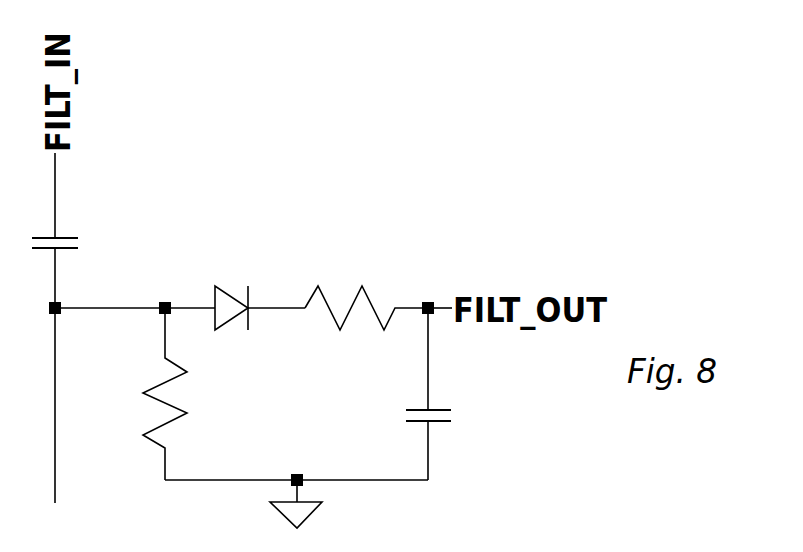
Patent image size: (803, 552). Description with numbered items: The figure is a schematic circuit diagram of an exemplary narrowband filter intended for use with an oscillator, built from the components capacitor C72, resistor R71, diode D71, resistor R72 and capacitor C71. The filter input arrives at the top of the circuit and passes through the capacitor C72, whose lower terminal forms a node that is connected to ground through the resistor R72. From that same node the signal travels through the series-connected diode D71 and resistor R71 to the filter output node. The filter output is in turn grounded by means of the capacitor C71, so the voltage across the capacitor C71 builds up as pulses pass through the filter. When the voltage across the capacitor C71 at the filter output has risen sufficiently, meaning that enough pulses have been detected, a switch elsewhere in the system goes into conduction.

The capacitor C72 is at (78, 219).
The diode D71 is at (254, 290).
The resistor R71 is at (366, 290).
The resistor R72 is at (132, 394).
The capacitor C71 is at (450, 394).